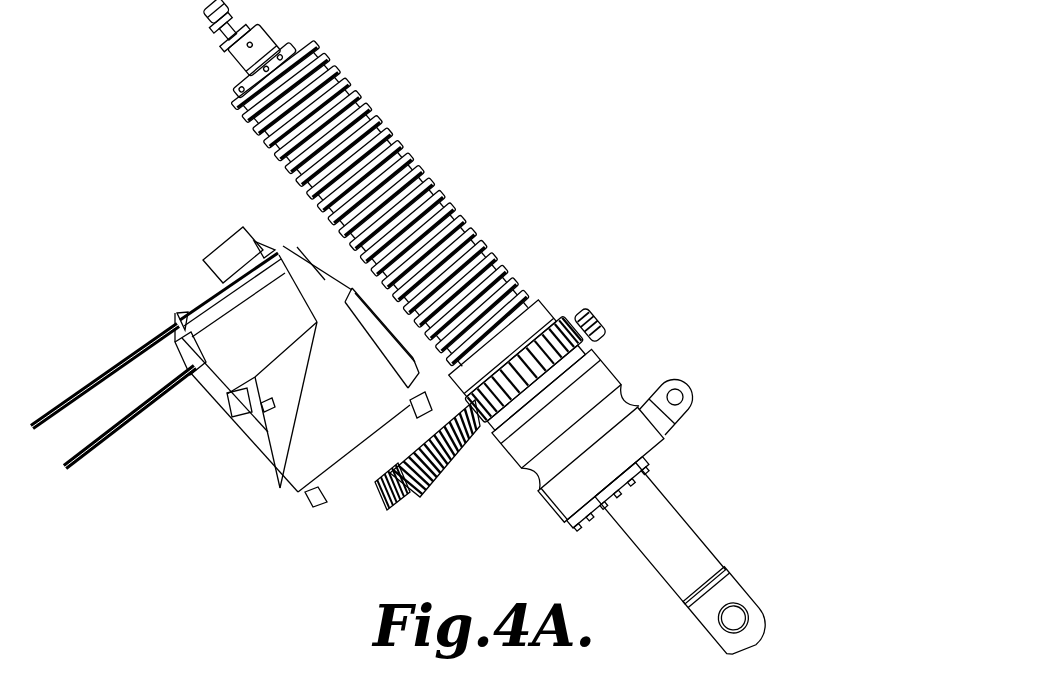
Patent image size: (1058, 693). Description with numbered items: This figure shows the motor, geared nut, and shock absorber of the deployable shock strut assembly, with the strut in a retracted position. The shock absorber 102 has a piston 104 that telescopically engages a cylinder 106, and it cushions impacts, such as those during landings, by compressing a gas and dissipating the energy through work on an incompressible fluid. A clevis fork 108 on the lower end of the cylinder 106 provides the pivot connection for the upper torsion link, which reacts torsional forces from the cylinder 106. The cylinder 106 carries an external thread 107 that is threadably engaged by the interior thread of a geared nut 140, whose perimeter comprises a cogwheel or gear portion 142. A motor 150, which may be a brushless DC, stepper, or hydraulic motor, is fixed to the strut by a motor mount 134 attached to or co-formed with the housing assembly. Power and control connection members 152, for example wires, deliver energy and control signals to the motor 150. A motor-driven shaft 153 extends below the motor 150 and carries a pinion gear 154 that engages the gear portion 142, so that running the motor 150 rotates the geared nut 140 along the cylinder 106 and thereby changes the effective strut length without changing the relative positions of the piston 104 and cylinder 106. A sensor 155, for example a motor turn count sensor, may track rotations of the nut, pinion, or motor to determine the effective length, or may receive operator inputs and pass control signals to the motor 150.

The shock absorber 102 is at (483, 331).
The piston 104 is at (706, 530).
The cylinder 106 is at (450, 203).
The external thread 107 is at (409, 163).
The clevis fork 108 is at (690, 380).
The motor mount 134 is at (300, 488).
The geared nut 140 is at (605, 318).
The gear portion 142 is at (594, 318).
The motor 150 is at (255, 360).
The power and control connection members 152 is at (70, 396).
The motor-driven shaft 153 is at (442, 497).
The pinion gear 154 is at (384, 508).
The sensor 155 is at (232, 224).